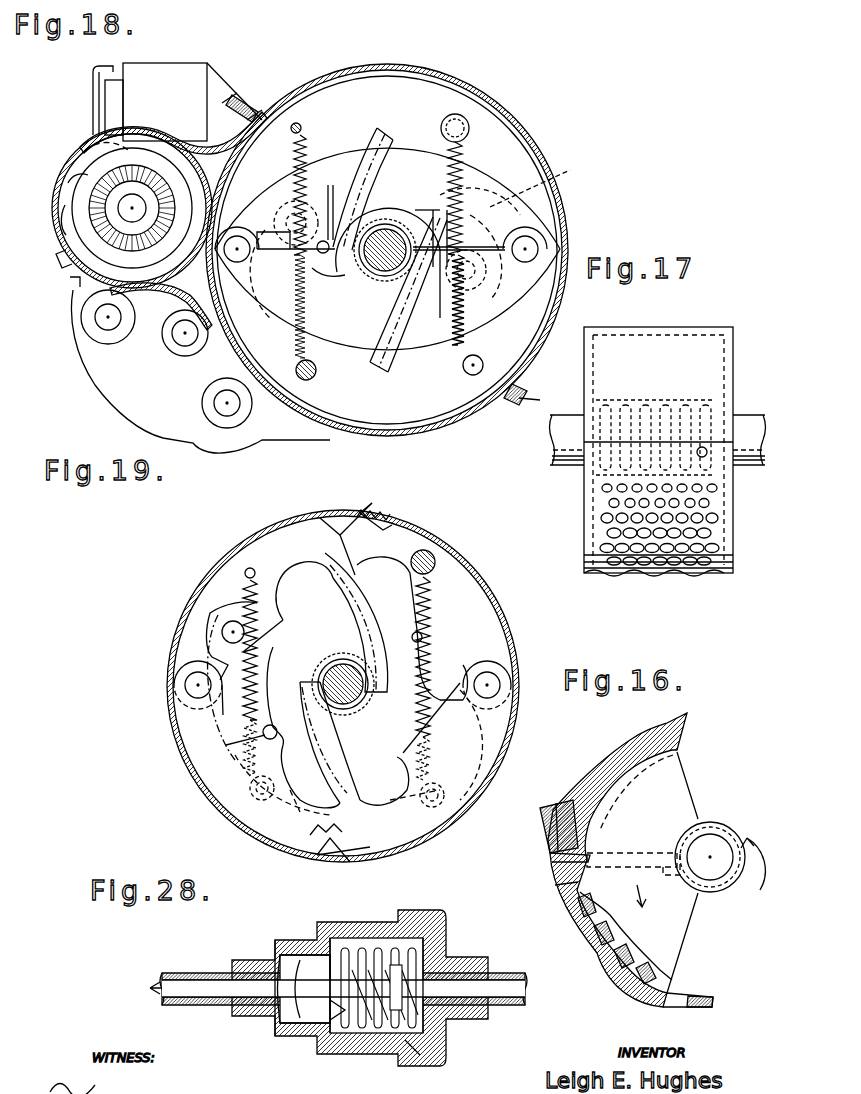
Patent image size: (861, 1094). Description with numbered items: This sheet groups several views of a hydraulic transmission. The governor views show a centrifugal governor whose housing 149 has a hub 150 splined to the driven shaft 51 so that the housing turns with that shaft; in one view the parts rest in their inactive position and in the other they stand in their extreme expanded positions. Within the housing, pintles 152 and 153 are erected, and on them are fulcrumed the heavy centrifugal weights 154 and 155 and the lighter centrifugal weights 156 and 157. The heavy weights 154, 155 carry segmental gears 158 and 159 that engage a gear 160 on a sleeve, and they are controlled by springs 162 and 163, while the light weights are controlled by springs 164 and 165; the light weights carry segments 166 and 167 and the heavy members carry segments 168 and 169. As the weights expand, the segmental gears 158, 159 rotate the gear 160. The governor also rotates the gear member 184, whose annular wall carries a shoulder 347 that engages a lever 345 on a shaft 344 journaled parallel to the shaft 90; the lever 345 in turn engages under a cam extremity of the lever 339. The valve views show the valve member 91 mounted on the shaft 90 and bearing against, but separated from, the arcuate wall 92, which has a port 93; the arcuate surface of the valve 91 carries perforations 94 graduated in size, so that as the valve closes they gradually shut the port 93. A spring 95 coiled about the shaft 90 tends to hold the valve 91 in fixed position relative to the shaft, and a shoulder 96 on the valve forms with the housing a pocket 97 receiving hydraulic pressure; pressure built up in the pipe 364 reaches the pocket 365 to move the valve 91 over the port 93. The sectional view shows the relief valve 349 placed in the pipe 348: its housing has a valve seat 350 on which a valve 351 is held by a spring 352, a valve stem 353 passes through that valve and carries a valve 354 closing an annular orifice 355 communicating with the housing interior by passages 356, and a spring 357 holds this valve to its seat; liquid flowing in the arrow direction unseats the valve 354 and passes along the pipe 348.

In FIG. 18, the driven shaft 51 is at (387, 240).
In FIG. 19, the driven shaft 51 is at (340, 675).
In FIG. 18, the shaft 90 is at (130, 208).
In FIG. 17, the shaft 90 is at (556, 458).
In FIG. 16, the shaft 90 is at (712, 847).
In FIG. 17, the valve member 91 is at (735, 358).
In FIG. 16, the valve member 91 is at (672, 782).
In FIG. 16, the arcuate wall 92 is at (600, 975).
In FIG. 16, the port 93 is at (682, 1000).
In FIG. 17, the perforations 94 is at (682, 505).
In FIG. 16, the perforations 94 is at (592, 952).
In FIG. 17, the spring 95 is at (674, 400).
In FIG. 16, the spring 95 is at (701, 872).
In FIG. 17, the shoulder 96 is at (718, 445).
In FIG. 16, the shoulder 96 is at (558, 886).
In FIG. 16, the pocket 97 is at (555, 862).
In FIG. 18, the housing 149 is at (513, 153).
In FIG. 19, the housing 149 is at (383, 580).
In FIG. 18, the hub 150 is at (373, 277).
In FIG. 19, the hub 150 is at (355, 713).
In FIG. 18, the pintle 152 is at (236, 242).
In FIG. 19, the pintle 152 is at (193, 688).
In FIG. 18, the pintle 153 is at (555, 240).
In FIG. 19, the pintle 153 is at (490, 680).
In FIG. 18, the heavy centrifugal weight 154 is at (503, 297).
In FIG. 19, the heavy centrifugal weight 154 is at (487, 757).
In FIG. 18, the heavy centrifugal weight 155 is at (272, 187).
In FIG. 19, the heavy centrifugal weight 155 is at (210, 595).
In FIG. 18, the light centrifugal weight 156 is at (477, 187).
In FIG. 19, the light centrifugal weight 156 is at (463, 580).
In FIG. 18, the light centrifugal weight 157 is at (282, 313).
In FIG. 19, the light centrifugal weight 157 is at (227, 790).
In FIG. 18, the segmental gear 158 is at (367, 143).
In FIG. 19, the segmental gear 158 is at (322, 757).
In FIG. 18, the segmental gear 159 is at (395, 350).
In FIG. 19, the segmental gear 159 is at (377, 617).
In FIG. 18, the gear 160 is at (371, 225).
In FIG. 19, the gear 160 is at (367, 693).
In FIG. 18, the spring 162 is at (447, 160).
In FIG. 19, the spring 162 is at (440, 613).
In FIG. 18, the spring 163 is at (315, 350).
In FIG. 19, the spring 163 is at (243, 683).
In FIG. 18, the spring 164 is at (465, 338).
In FIG. 19, the spring 164 is at (497, 787).
In FIG. 18, the spring 165 is at (300, 170).
In FIG. 19, the spring 165 is at (265, 667).
In FIG. 18, the segment 166 is at (546, 180).
In FIG. 19, the segment 166 is at (450, 670).
In FIG. 18, the segment 167 is at (207, 362).
In FIG. 19, the segment 167 is at (243, 710).
In FIG. 18, the segment 168 is at (421, 201).
In FIG. 19, the segment 168 is at (330, 548).
In FIG. 18, the segment 169 is at (327, 273).
In FIG. 19, the segment 169 is at (340, 860).
In FIG. 18, the gear member 184 is at (163, 190).
In FIG. 18, the lever 339 is at (118, 67).
In FIG. 18, the shaft 344 is at (88, 152).
In FIG. 18, the lever 345 is at (70, 182).
In FIG. 18, the shoulder 347 is at (67, 220).
In FIG. 28, the pipe 348 is at (190, 975).
In FIG. 28, the relief valve 349 is at (332, 925).
In FIG. 28, the valve seat 350 is at (310, 935).
In FIG. 28, the valve 351 is at (345, 945).
In FIG. 28, the spring 352 is at (415, 940).
In FIG. 28, the valve stem 353 is at (333, 992).
In FIG. 28, the valve 354 is at (302, 1000).
In FIG. 28, the annular orifice 355 is at (345, 1005).
In FIG. 28, the passages 356 is at (375, 1040).
In FIG. 28, the spring 357 is at (413, 1050).
In FIG. 16, the pipe 364 is at (548, 848).
In FIG. 16, the pocket 365 is at (590, 855).